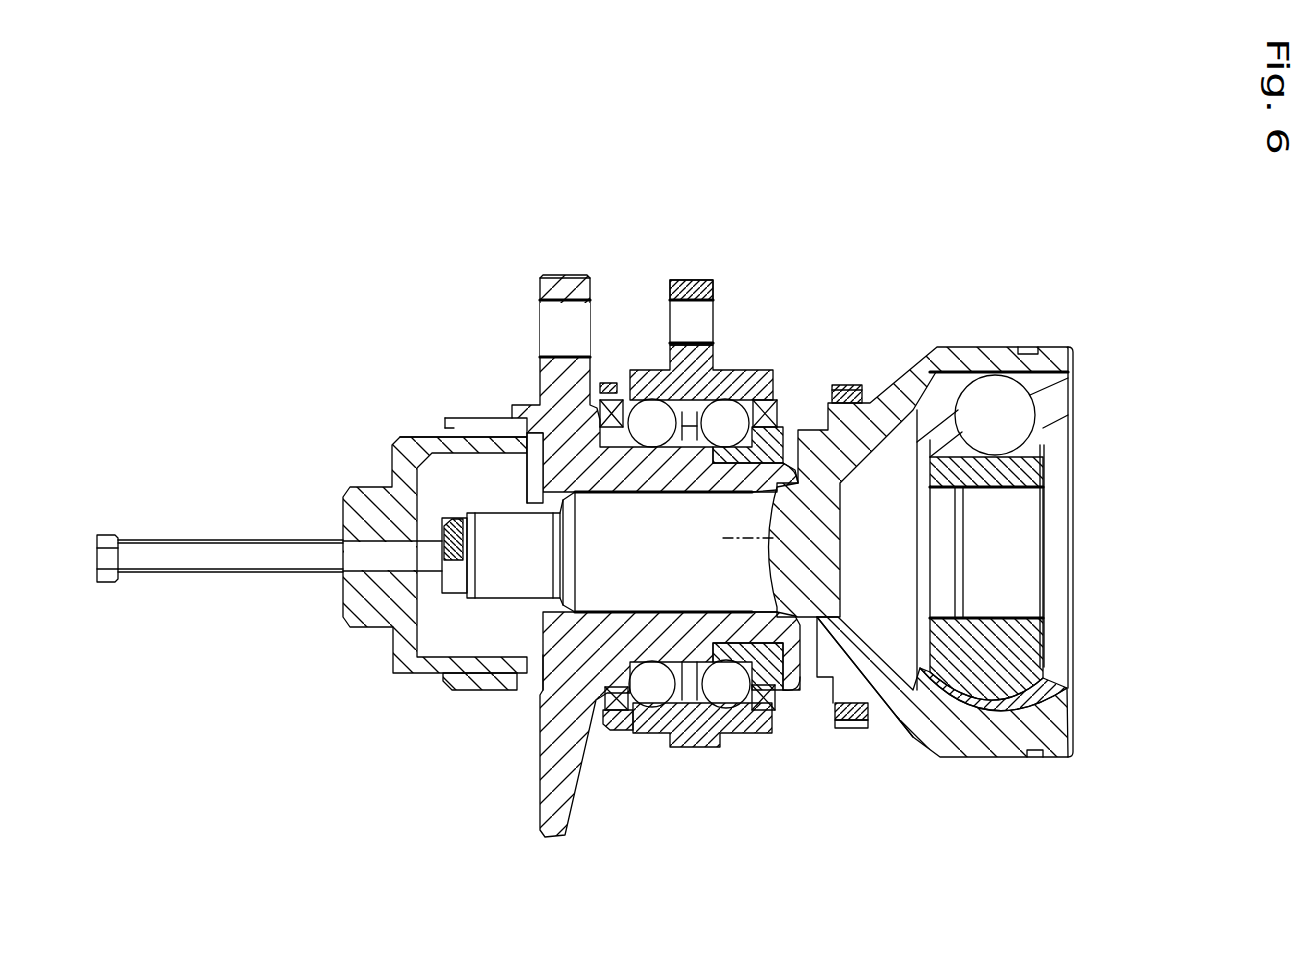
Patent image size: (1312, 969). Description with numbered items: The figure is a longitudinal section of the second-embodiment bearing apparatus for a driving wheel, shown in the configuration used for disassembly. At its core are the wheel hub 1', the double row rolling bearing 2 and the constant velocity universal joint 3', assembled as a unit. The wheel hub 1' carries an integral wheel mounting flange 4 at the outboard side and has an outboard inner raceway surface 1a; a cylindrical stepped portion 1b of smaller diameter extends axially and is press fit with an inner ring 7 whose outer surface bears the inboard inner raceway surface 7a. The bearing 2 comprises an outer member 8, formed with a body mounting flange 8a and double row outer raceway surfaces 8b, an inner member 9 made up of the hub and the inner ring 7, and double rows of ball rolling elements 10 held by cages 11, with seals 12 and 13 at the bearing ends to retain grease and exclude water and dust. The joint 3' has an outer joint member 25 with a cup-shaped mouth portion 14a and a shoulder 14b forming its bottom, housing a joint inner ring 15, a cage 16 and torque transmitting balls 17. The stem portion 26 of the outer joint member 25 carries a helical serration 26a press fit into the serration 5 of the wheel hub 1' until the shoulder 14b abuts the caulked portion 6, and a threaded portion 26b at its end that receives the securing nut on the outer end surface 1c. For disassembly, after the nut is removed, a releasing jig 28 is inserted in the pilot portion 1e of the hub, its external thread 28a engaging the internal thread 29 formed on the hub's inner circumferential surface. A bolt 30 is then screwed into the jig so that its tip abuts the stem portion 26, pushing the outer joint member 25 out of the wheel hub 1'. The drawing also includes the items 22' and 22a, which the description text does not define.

The wheel hub 1' is at (630, 556).
The inner raceway surface 1a is at (625, 435).
The cylindrical stepped portion 1b is at (810, 497).
The outer end surface 1c is at (545, 463).
The pilot portion 1e is at (447, 422).
The double row rolling bearing 2 is at (708, 341).
The constant velocity universal joint 3' is at (949, 547).
The wheel mounting flange 4 is at (540, 282).
The serration 5 is at (672, 503).
The caulked portion 6 is at (809, 690).
The inner ring 7 is at (781, 437).
The inner raceway surface 7a is at (743, 393).
The outer member 8 is at (663, 353).
The body mounting flange 8a is at (690, 278).
The outer raceway surfaces 8b is at (665, 395).
The inner member 9 is at (603, 660).
The rolling elements 10 is at (694, 752).
The cages 11 is at (663, 702).
The seal 12 is at (617, 727).
The seal 13 is at (766, 733).
The mouth portion 14a is at (1053, 350).
The shoulder 14b is at (835, 428).
The joint inner ring 15 is at (1037, 645).
The cage 16 is at (1062, 421).
The torque transmitting balls 17 is at (1013, 398).
The outer joint member 22' is at (860, 727).
The stepped portion 22a is at (851, 730).
The outer joint member 25 is at (984, 356).
The stem portion 26 is at (790, 545).
The serration 26a is at (608, 625).
The threaded portion 26b is at (494, 606).
The releasing jig 28 is at (373, 612).
The external thread 28a is at (430, 674).
The internal thread 29 is at (422, 436).
The bolt 30 is at (171, 548).